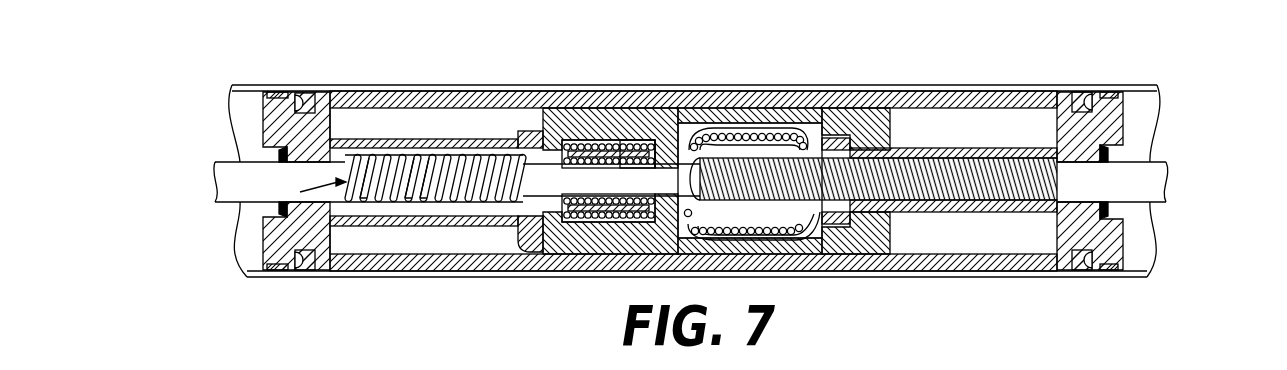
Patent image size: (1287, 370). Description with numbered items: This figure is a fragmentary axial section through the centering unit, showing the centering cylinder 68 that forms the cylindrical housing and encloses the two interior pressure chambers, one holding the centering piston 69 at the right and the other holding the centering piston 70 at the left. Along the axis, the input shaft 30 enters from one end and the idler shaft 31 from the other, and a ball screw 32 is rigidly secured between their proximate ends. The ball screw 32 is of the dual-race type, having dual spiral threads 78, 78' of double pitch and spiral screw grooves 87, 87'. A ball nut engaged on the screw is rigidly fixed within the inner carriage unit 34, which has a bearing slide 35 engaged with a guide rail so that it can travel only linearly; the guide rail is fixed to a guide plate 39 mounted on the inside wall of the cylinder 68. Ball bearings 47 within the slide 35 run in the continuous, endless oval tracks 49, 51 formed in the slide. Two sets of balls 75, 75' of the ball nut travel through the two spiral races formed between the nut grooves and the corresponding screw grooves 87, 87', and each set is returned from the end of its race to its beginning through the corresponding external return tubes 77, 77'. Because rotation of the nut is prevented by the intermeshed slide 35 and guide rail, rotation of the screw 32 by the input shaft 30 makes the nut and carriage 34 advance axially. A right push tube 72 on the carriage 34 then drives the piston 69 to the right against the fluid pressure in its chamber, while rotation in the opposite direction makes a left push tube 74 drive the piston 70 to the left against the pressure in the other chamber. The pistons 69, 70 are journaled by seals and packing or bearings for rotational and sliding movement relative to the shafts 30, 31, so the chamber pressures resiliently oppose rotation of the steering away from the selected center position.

The input shaft 30 is at (1166, 174).
The idler shaft 31 is at (233, 172).
The ball screw 32 is at (300, 192).
The inner carriage unit 34 is at (576, 238).
The bearing slide 35 is at (570, 126).
The guide plate 39 is at (460, 91).
The ball bearings 47 is at (607, 146).
The oval track 49 is at (638, 146).
The oval track 51 is at (613, 228).
The centering cylinder 68 is at (938, 278).
The centering piston 69 is at (1124, 118).
The centering piston 70 is at (263, 102).
The right push tube 72 is at (975, 148).
The left push tube 74 is at (352, 139).
The balls 75 is at (758, 272).
The balls 75' is at (748, 95).
The external return tube 77 is at (852, 273).
The external return tube 77' is at (844, 94).
The spiral thread 78 is at (424, 247).
The spiral thread 78' is at (381, 249).
The spiral screw groove 87 is at (426, 248).
The spiral screw groove 87' is at (454, 248).